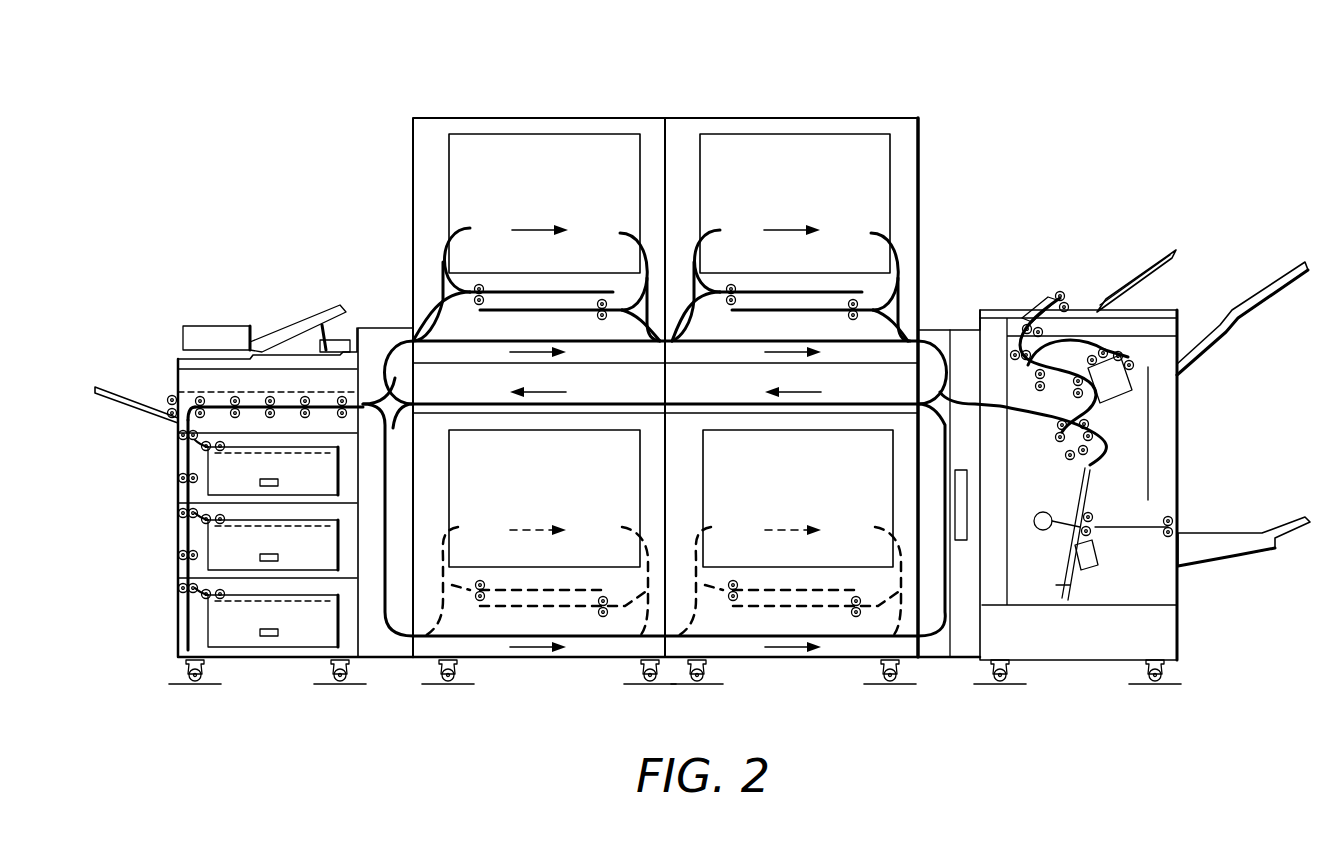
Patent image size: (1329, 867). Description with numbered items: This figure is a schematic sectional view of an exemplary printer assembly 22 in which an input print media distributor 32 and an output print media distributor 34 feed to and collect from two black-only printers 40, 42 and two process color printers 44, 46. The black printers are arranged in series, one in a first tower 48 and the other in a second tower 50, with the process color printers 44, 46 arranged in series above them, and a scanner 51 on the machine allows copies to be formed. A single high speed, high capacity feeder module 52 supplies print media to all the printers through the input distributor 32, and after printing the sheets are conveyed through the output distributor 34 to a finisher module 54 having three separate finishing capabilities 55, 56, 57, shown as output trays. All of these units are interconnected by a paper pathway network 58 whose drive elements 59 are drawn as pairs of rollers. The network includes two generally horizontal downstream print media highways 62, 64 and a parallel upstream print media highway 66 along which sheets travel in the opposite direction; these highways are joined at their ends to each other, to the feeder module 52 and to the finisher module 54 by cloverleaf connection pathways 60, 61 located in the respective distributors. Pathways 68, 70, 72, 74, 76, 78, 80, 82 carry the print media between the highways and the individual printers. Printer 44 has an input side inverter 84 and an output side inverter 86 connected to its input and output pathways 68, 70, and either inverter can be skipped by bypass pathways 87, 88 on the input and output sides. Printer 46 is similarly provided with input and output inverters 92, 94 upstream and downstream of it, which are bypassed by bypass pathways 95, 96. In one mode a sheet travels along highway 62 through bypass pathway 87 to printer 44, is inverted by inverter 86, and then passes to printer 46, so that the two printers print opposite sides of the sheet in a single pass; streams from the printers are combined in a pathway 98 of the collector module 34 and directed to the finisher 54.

The printer assembly 22 is at (350, 153).
The input print media distributor 32 is at (377, 327).
The output print media distributor 34 is at (936, 330).
The black only printer 40 is at (494, 554).
The black only printer 42 is at (827, 546).
The process color printer 44 is at (484, 147).
The process color printer 46 is at (721, 147).
The first tower 48 is at (524, 108).
The second tower 50 is at (806, 105).
The scanner 51 is at (283, 320).
The print media feed system 52 is at (188, 494).
The finisher module 54 is at (1030, 296).
The finishing capability 55 is at (1148, 268).
The finishing capability 56 is at (1225, 318).
The finishing capability 57 is at (1243, 530).
The paper pathway network 58 is at (454, 339).
The drive elements 59 is at (198, 400).
The cloverleaf connection pathway 60 is at (401, 420).
The cloverleaf connection pathway 61 is at (927, 418).
The downstream print media highway 62 is at (607, 348).
The downstream print media highway 64 is at (602, 641).
The upstream print media highway 66 is at (734, 402).
The input pathway 68 is at (460, 227).
The output pathway 70 is at (632, 232).
The pathway 72 is at (712, 228).
The pathway 74 is at (880, 232).
The pathway 76 is at (445, 525).
The pathway 78 is at (629, 525).
The pathway 80 is at (698, 540).
The pathway 82 is at (878, 525).
The input side inverter 84 is at (479, 284).
The output side inverter 86 is at (616, 298).
The bypass pathway 87 is at (440, 292).
The bypass pathway 88 is at (660, 310).
The input inverter 92 is at (735, 284).
The output inverter 94 is at (868, 300).
The bypass pathway 95 is at (690, 300).
The bypass pathway 96 is at (906, 310).
The pathway 98 is at (944, 353).